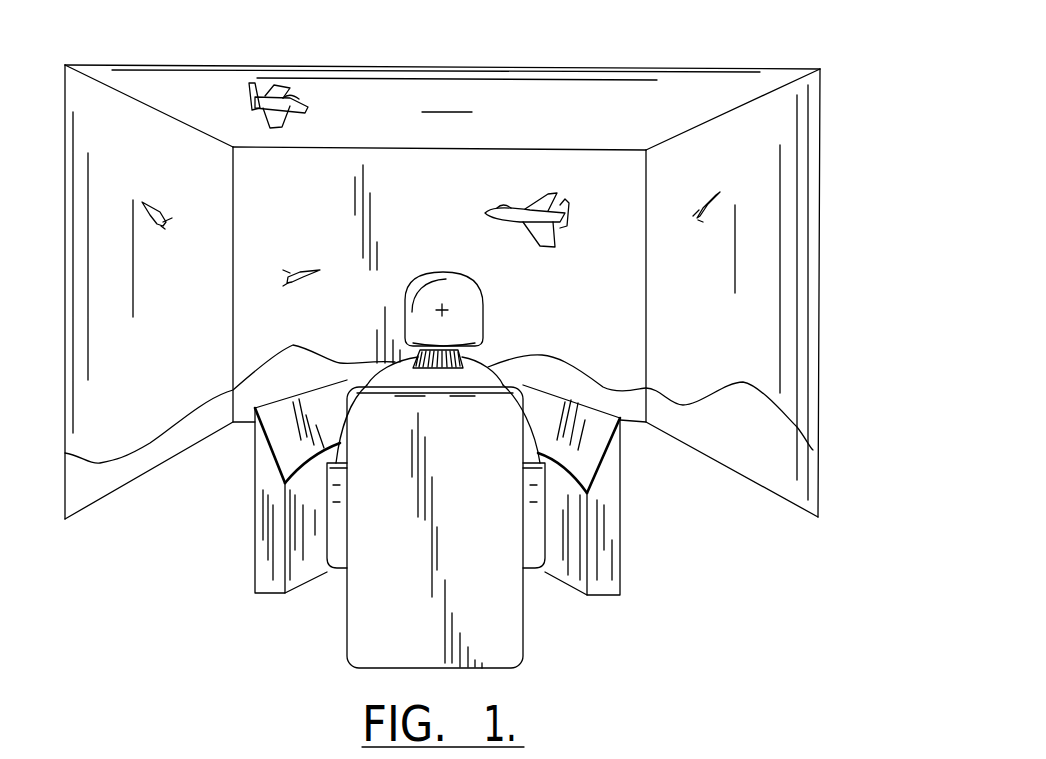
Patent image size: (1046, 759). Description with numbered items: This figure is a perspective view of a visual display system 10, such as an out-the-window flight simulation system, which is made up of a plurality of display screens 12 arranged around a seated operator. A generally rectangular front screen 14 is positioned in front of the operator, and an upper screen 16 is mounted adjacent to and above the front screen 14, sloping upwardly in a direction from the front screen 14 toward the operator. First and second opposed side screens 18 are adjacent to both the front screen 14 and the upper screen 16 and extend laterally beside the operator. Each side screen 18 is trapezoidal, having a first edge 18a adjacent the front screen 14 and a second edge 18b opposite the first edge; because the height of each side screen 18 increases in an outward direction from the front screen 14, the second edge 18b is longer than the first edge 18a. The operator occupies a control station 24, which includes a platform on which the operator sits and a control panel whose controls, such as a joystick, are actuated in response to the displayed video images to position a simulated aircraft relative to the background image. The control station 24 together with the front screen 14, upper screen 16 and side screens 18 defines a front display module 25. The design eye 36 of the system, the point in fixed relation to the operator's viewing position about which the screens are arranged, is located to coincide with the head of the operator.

The visual display system 10 is at (501, 468).
The display screens 12 is at (482, 259).
The front screen 14 is at (480, 165).
The upper screen 16 is at (677, 80).
The side screens 18 is at (767, 320).
The first edge 18a is at (233, 284).
The second edge 18b is at (60, 191).
The control station 24 is at (612, 494).
The front display module 25 is at (812, 40).
The design eye 36 is at (446, 308).